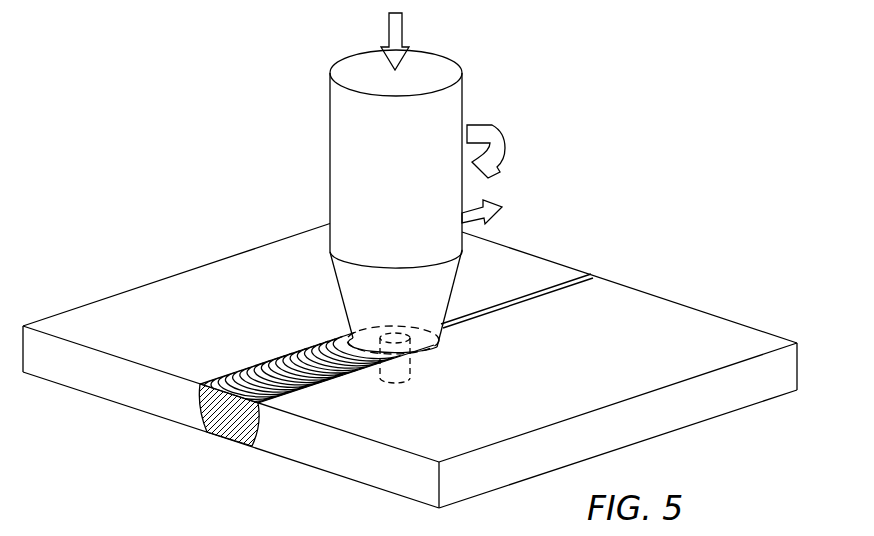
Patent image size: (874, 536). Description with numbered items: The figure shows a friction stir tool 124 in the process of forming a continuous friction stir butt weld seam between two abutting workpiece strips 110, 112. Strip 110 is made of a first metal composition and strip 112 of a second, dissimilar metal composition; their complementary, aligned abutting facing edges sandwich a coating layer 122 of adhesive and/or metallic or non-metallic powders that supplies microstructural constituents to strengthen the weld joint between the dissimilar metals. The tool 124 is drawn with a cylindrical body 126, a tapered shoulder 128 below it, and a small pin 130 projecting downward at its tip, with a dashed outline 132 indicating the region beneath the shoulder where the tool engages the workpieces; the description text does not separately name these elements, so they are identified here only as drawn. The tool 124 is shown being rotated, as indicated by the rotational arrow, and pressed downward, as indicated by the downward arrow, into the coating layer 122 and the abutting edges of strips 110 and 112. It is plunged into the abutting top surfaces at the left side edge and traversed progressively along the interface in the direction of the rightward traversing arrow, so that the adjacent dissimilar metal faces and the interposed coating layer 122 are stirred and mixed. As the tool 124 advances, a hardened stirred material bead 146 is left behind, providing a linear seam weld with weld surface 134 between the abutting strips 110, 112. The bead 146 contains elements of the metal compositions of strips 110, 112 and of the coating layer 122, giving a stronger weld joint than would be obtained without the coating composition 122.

The strip 110 is at (205, 342).
The strip 112 is at (648, 361).
The coating layer 122 is at (567, 281).
The friction stir tool 124 is at (420, 214).
The tool body 126 is at (370, 130).
The tool shoulder 128 is at (423, 300).
The tool pin 130 is at (413, 368).
The shoulder contact region 132 is at (432, 357).
The weld surface 134 is at (287, 357).
The hardened stirred material bead 146 is at (213, 430).